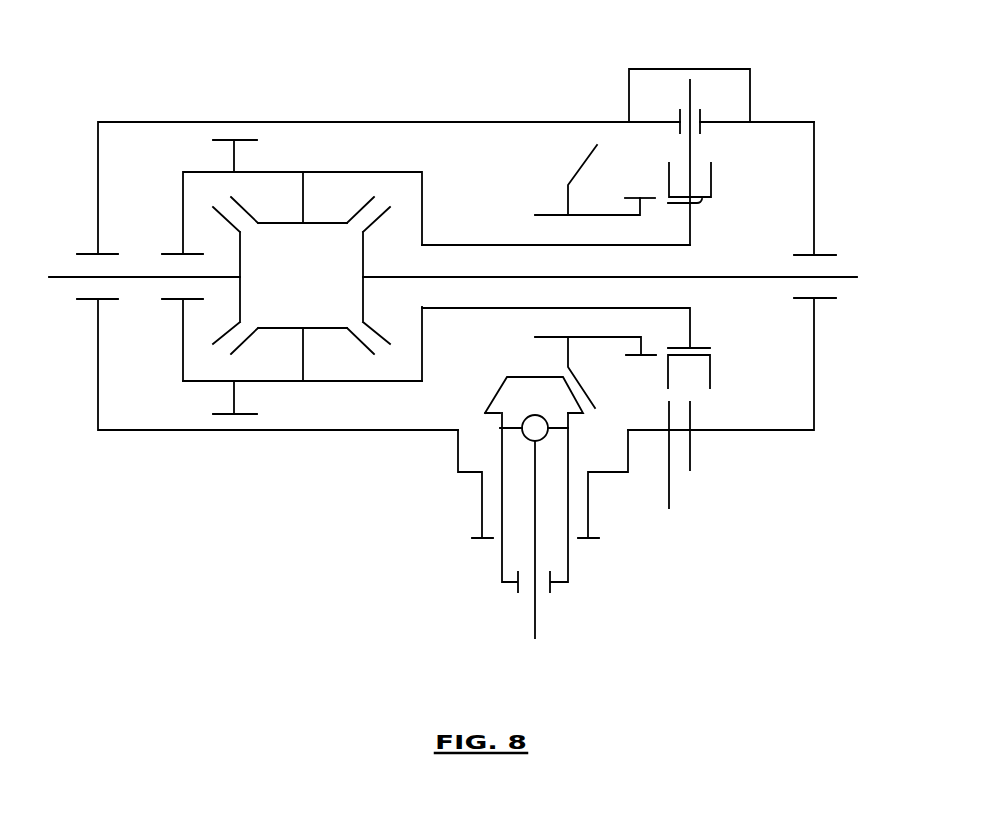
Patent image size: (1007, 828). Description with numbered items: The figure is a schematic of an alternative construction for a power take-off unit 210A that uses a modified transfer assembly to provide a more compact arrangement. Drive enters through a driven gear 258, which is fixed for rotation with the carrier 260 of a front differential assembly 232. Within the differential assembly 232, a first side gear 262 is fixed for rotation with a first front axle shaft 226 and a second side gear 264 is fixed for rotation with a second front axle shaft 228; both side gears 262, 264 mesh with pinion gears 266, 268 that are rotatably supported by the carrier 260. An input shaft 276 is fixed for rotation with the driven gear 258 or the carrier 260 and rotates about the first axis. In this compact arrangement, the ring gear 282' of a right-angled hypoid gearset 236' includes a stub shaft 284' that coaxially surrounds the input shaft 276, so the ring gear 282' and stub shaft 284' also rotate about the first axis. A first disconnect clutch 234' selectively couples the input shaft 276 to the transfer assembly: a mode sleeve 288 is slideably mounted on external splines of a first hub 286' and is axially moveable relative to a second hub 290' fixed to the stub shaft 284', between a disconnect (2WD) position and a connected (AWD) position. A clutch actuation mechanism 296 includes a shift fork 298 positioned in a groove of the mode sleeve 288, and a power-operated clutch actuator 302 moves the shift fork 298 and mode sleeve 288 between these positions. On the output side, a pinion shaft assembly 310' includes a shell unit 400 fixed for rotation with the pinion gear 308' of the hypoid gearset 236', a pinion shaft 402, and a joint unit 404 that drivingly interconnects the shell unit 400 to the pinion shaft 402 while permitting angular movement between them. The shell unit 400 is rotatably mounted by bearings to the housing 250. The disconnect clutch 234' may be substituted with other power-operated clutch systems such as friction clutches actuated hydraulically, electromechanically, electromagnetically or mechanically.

The power take-off unit 210A is at (225, 455).
The first front axle shaft 226 is at (49, 276).
The second front axle shaft 228 is at (845, 275).
The front differential assembly 232 is at (352, 387).
The first disconnect clutch 234' is at (743, 143).
The hypoid gearset 236' is at (612, 422).
The housing 250 is at (813, 173).
The driven gear 258 is at (234, 140).
The carrier 260 is at (345, 172).
The first side gear 262 is at (241, 303).
The second side gear 264 is at (362, 250).
The pinion gear 266 is at (303, 202).
The pinion gear 268 is at (303, 358).
The input shaft 276 is at (497, 245).
The ring gear 282' is at (550, 179).
The stub shaft 284' is at (595, 367).
The first hub 286' is at (725, 217).
The mode sleeve 288 is at (711, 375).
The second hub 290' is at (636, 175).
The clutch actuation mechanism 296 is at (801, 70).
The shift fork 298 is at (690, 95).
The power-operated clutch actuator 302 is at (725, 80).
The pinion gear 308' is at (517, 377).
The pinion shaft assembly 310' is at (514, 523).
The shell unit 400 is at (568, 555).
The pinion shaft 402 is at (535, 620).
The joint unit 404 is at (533, 428).